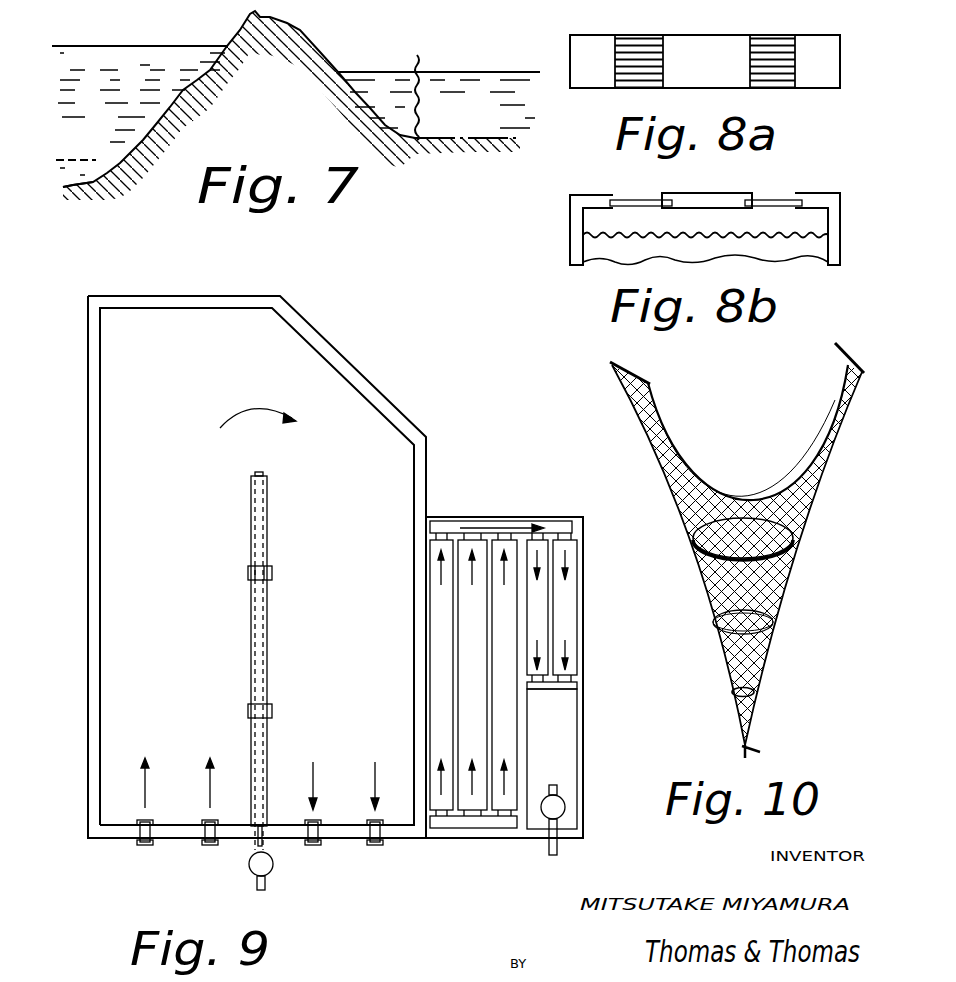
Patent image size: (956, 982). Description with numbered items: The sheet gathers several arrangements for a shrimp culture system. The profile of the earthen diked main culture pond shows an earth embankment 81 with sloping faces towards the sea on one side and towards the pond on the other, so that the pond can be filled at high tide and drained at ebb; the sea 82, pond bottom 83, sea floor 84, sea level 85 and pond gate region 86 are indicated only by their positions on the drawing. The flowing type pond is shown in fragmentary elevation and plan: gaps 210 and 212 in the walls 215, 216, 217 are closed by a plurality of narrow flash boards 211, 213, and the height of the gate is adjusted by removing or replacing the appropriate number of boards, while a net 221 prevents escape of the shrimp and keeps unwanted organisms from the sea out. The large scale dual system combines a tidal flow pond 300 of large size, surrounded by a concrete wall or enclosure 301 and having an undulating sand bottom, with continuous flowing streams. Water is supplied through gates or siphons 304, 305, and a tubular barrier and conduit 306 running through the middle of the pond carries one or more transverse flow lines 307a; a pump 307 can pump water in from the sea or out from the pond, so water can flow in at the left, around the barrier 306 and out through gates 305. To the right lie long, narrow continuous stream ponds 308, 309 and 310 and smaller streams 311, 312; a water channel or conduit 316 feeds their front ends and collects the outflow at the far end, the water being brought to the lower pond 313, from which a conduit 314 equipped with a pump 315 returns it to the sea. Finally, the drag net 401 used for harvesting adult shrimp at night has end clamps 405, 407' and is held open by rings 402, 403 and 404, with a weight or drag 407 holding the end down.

In FIG. 7, the earth embankment 81 is at (305, 38).
In FIG. 7, the pond 82 is at (535, 38).
In FIG. 7, the pond bottom 83 is at (425, 140).
In FIG. 7, the sea bottom 84 is at (100, 178).
In FIG. 7, the sea level 85 is at (69, 46).
In FIG. 7, the screen / water exchange passage 86 is at (417, 55).
In FIG. 8B, the gap 210 is at (628, 200).
In FIG. 8A, the flash boards 211 is at (765, 36).
In FIG. 8B, the gap 212 is at (782, 200).
In FIG. 8A, the flash boards 213 is at (640, 36).
In FIG. 8A, the wall 215 is at (695, 36).
In FIG. 8B, the wall 215 is at (722, 193).
In FIG. 8A, the wall 216 is at (820, 36).
In FIG. 8B, the wall 216 is at (598, 195).
In FIG. 8A, the wall 217 is at (585, 40).
In FIG. 8B, the wall 217 is at (812, 193).
In FIG. 8B, the net 221 is at (678, 235).
In FIG. 9, the tidal flow pond 300 is at (363, 412).
In FIG. 9, the concrete wall 301 is at (100, 690).
In FIG. 9, the gates or siphons 304 is at (210, 845).
In FIG. 9, the gates or siphons 305 is at (375, 845).
In FIG. 9, the tubular barrier and conduit 306 is at (271, 748).
In FIG. 9, the pump 307 is at (272, 868).
In FIG. 9, the transverse flow lines 307a is at (272, 575).
In FIG. 9, the continuous stream pond 308 is at (432, 612).
In FIG. 9, the continuous stream pond 309 is at (470, 632).
In FIG. 9, the continuous stream pond 310 is at (505, 657).
In FIG. 9, the smaller stream 311 is at (538, 604).
In FIG. 9, the smaller stream 312 is at (565, 624).
In FIG. 9, the pond 313 is at (563, 731).
In FIG. 9, the conduit 314 is at (557, 845).
In FIG. 9, the pump 315 is at (565, 806).
In FIG. 9, the water channel or conduit 316 is at (466, 838).
In FIG. 10, the drag net 401 is at (768, 572).
In FIG. 10, the ring 402 is at (755, 690).
In FIG. 10, the ring 403 is at (775, 625).
In FIG. 10, the ring 404 is at (780, 556).
In FIG. 10, the end clamp 405 is at (836, 345).
In FIG. 10, the weight or drag 407 is at (655, 370).
In FIG. 10, the end clamp 407' is at (780, 745).